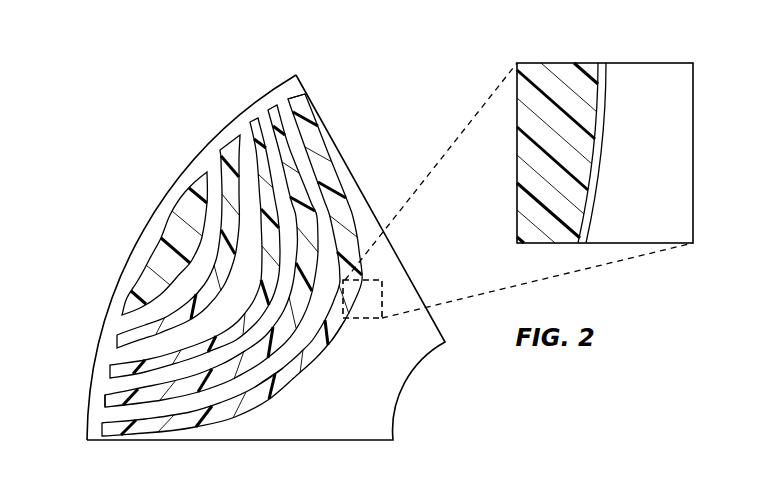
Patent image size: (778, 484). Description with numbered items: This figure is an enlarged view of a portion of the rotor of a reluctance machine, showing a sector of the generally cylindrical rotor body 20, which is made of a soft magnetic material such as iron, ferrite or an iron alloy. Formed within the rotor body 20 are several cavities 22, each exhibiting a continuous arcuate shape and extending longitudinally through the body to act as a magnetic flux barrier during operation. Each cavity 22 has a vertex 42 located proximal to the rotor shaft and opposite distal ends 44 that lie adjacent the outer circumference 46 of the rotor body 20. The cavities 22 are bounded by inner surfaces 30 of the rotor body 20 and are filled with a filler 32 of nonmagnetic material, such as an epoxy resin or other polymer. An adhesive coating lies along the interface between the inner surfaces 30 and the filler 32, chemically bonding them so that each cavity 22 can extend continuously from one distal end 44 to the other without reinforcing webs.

The rotor body 20 is at (187, 166).
The cavities 22 is at (328, 152).
The inner surfaces 30 is at (268, 400).
The filler 32 is at (212, 428).
The vertex 42 is at (342, 353).
The distal ends 44 is at (292, 95).
The outer circumference 46 is at (147, 230).